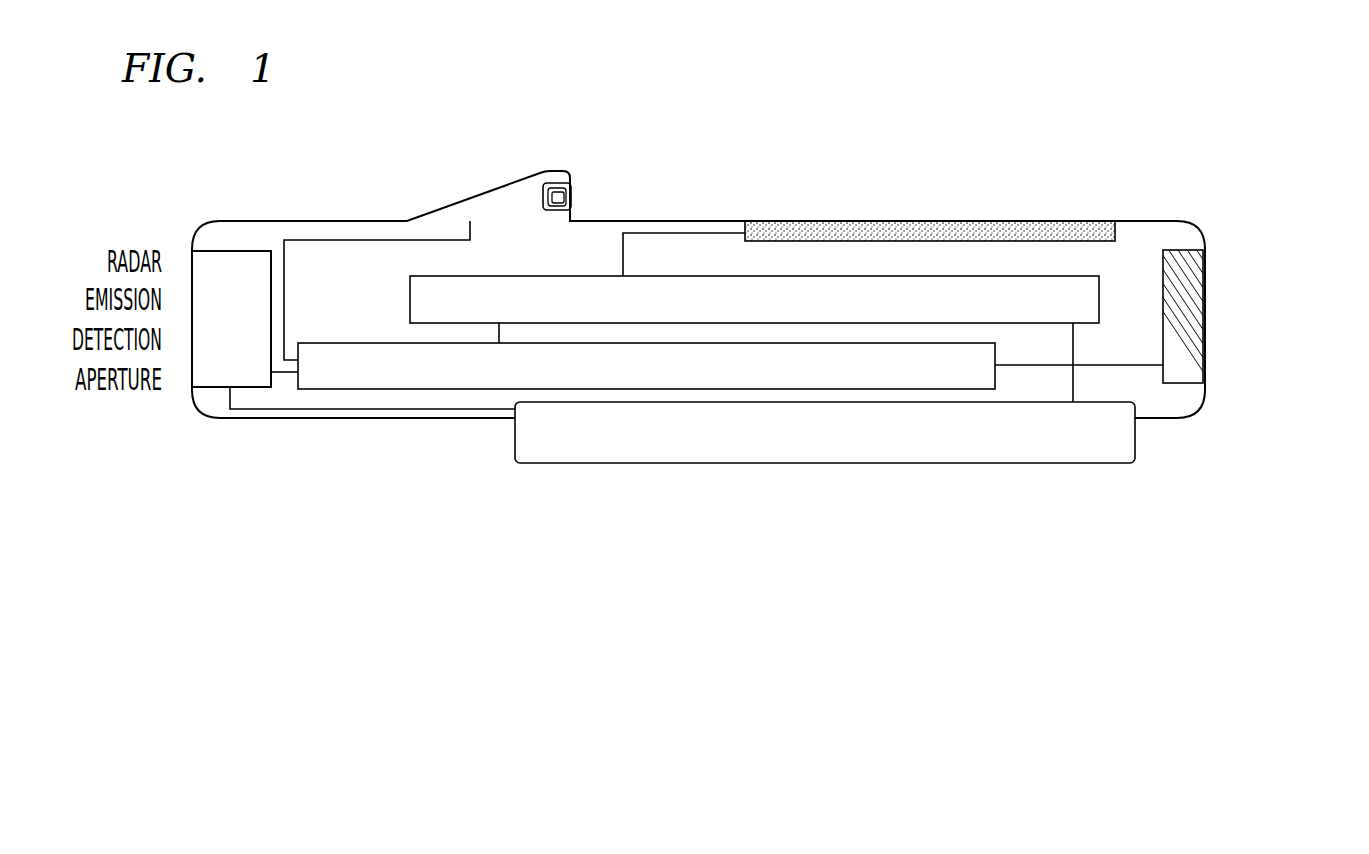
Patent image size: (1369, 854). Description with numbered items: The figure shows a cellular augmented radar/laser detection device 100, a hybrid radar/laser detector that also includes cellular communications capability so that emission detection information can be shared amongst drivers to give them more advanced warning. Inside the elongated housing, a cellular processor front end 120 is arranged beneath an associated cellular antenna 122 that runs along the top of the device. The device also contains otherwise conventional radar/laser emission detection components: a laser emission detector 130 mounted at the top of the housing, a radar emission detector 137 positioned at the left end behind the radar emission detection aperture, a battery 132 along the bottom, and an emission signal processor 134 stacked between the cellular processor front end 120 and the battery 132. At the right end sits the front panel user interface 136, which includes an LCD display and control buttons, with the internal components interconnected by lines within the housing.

The cellular augmented radar/laser detection device 100 is at (1100, 98).
The cellular processor front end 120 is at (1028, 270).
The cellular antenna 122 is at (910, 218).
The laser emission detector 130 is at (577, 198).
The battery 132 is at (973, 440).
The emission signal processor 134 is at (355, 370).
The front panel user interface 136 is at (1185, 375).
The radar emission detector 137 is at (215, 375).